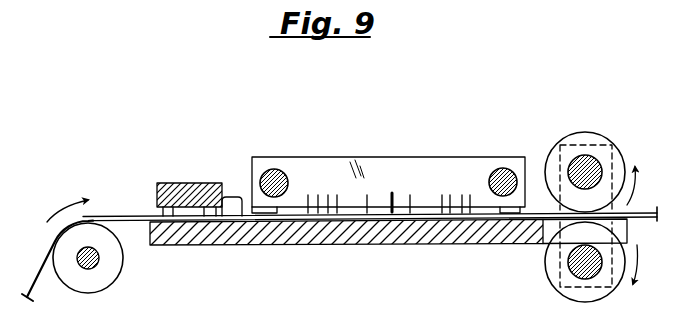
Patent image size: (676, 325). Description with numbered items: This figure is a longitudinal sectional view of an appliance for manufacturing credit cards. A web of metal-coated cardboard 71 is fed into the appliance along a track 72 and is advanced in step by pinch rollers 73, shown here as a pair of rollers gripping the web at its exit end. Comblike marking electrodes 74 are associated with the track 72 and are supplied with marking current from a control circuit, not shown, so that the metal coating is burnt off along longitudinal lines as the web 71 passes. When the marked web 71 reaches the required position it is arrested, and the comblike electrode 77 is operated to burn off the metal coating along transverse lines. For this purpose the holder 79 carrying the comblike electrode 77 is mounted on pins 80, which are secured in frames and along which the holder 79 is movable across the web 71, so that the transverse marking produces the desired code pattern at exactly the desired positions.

The web of metal-coated cardboard 71 is at (115, 216).
The track 72 is at (180, 183).
The pinch rollers 73 is at (553, 162).
The comblike marking electrodes 74 is at (233, 197).
The comblike electrode 77 is at (393, 210).
The holder 79 is at (395, 167).
The pins 80 is at (283, 176).